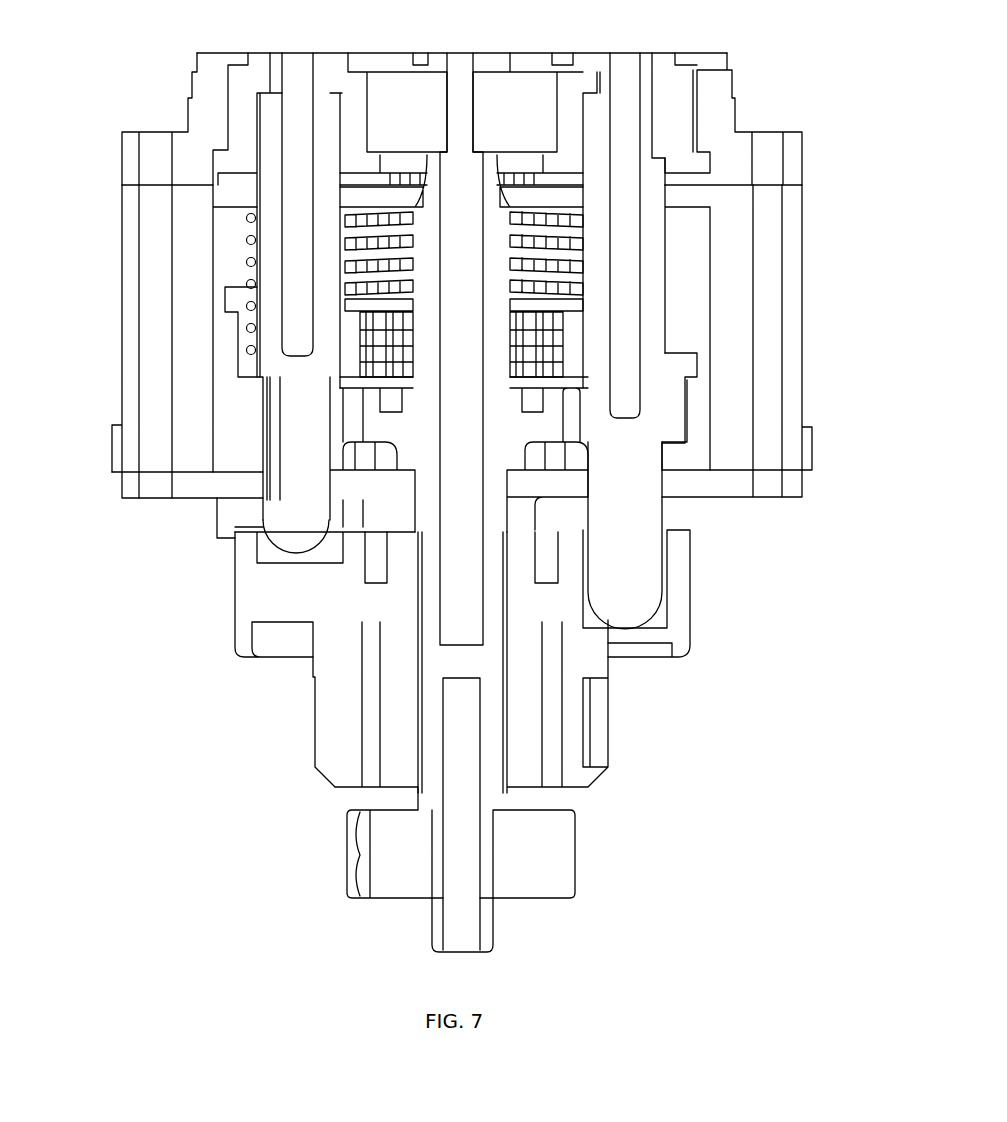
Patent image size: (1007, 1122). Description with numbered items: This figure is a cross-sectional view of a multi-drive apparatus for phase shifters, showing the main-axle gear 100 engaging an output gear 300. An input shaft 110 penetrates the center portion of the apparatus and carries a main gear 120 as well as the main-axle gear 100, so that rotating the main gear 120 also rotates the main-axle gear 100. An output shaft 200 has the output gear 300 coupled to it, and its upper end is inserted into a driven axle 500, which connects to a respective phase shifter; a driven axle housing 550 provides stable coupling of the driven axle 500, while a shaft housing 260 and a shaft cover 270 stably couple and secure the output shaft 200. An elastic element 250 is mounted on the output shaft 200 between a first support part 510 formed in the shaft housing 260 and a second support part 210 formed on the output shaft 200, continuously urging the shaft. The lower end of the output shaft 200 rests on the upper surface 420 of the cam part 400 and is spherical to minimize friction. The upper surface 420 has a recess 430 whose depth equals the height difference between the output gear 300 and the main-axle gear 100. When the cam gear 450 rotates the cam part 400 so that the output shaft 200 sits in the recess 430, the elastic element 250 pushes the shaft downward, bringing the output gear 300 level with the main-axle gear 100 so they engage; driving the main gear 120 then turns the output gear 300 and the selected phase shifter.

The main-axle gear 100 is at (548, 424).
The input shaft 110 is at (460, 913).
The main gear 120 is at (360, 855).
The output shaft 200 is at (633, 518).
The second support part 210 is at (688, 363).
The elastic element 250 is at (340, 214).
The shaft housing 260 is at (187, 340).
The shaft cover 270 is at (190, 482).
The output gear 300 is at (672, 410).
The cam part 400 is at (268, 592).
The upper surface 420 is at (270, 549).
The recess 430 is at (660, 618).
The cam gear 450 is at (334, 726).
The driven axle 500 is at (683, 92).
The first support part 510 is at (688, 196).
The driven axle housing 550 is at (188, 157).